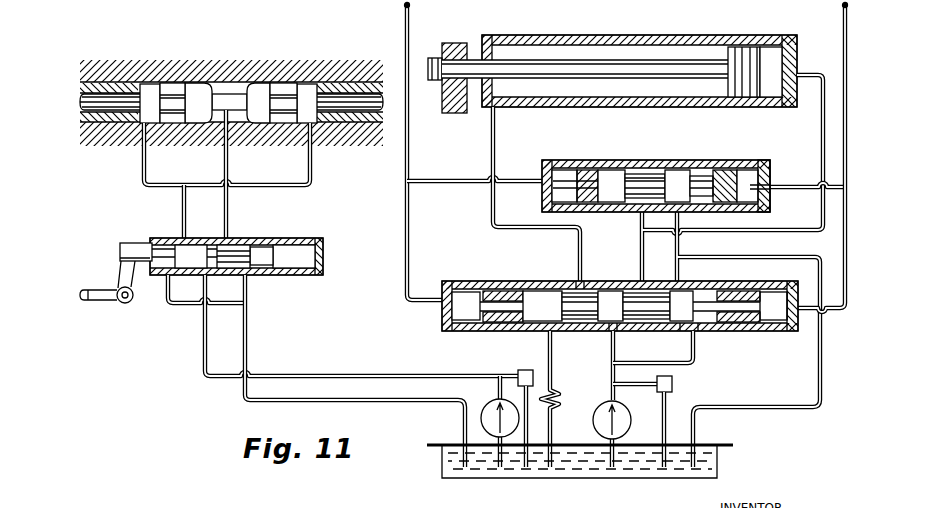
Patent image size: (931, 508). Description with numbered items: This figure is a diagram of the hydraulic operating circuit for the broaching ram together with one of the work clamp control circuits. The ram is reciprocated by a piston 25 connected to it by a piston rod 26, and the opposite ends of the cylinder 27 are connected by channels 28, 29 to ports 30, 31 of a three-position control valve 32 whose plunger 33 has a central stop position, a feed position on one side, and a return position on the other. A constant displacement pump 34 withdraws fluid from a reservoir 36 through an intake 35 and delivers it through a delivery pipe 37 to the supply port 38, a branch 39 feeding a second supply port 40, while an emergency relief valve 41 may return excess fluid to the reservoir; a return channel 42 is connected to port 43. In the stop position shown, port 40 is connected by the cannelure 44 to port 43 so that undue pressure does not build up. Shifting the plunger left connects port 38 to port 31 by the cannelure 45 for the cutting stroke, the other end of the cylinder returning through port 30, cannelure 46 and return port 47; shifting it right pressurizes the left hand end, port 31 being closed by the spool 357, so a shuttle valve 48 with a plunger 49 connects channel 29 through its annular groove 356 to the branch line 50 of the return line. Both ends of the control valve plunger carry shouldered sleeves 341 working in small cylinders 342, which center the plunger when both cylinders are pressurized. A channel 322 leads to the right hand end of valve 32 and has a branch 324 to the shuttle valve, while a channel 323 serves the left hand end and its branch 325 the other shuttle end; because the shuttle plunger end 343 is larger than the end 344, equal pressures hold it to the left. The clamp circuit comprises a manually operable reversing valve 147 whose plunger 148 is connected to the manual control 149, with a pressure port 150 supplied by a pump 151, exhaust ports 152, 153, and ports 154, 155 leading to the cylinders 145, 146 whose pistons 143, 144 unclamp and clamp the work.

The piston 25 is at (745, 53).
The piston rod 26 is at (592, 67).
The cylinder 27 is at (665, 43).
The channel 28 is at (496, 132).
The channel 29 is at (822, 134).
The port 30 is at (548, 295).
The port 31 is at (637, 303).
The three-position control valve 32 is at (450, 279).
The plunger 33 is at (542, 278).
The constant displacement pump 34 is at (593, 426).
The intake 35 is at (607, 458).
The reservoir 36 is at (707, 447).
The delivery pipe 37 is at (613, 349).
The supply port 38 is at (604, 335).
The branch 39 is at (688, 364).
The second supply port 40 is at (697, 333).
The emergency relief valve 41 is at (673, 391).
The return channel 42 is at (782, 284).
The port 43 is at (682, 284).
The cannelure 44 is at (687, 310).
The cannelure 45 is at (610, 303).
The cannelure 46 is at (582, 303).
The return port 47 is at (545, 334).
The shuttle valve 48 is at (768, 167).
The plunger 49 is at (677, 178).
The branch line 50 is at (693, 213).
The piston 143 is at (170, 100).
The piston 144 is at (283, 100).
The cylinder 145 is at (148, 92).
The cylinder 146 is at (258, 100).
The manually operable reversing valve 147 is at (298, 240).
The plunger 148 is at (142, 222).
The manual control 149 is at (93, 300).
The pressure port 150 is at (209, 277).
The pump 151 is at (488, 407).
The exhaust port 152 is at (164, 277).
The exhaust port 153 is at (256, 277).
The port 154 is at (187, 241).
The port 155 is at (237, 240).
The channel 322 is at (845, 23).
The channel 323 is at (410, 18).
The branch 324 is at (813, 188).
The channel 325 is at (472, 179).
The shouldered sleeves 341 is at (503, 296).
The small cylinders 342 is at (468, 308).
The end 343 is at (715, 184).
The end 344 is at (589, 172).
The annular groove 356 is at (638, 185).
The spool 357 is at (605, 297).